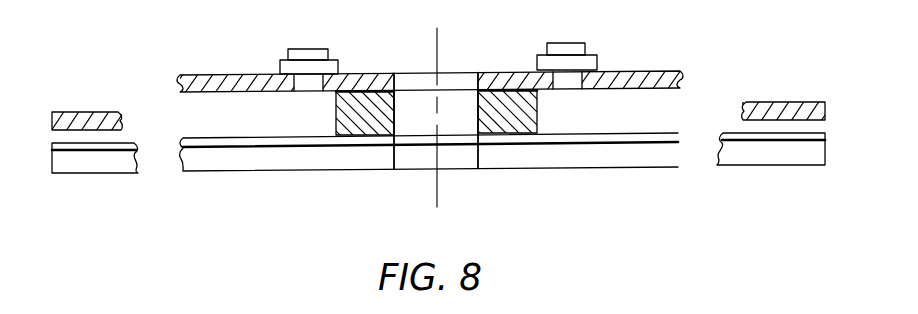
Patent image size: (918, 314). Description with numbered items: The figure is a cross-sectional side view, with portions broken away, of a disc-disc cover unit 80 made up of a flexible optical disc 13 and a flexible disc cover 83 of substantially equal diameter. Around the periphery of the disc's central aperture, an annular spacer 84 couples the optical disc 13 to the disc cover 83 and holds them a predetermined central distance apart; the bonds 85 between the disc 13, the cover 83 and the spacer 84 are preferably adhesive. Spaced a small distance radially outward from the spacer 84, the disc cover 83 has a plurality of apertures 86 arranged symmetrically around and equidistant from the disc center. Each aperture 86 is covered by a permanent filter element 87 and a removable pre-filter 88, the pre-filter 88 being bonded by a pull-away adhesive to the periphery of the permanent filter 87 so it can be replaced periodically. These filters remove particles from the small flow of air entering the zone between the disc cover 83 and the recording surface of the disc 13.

The optical disc 13 is at (205, 173).
The disc-disc cover unit 80 is at (360, 172).
The disc cover 83 is at (203, 74).
The annular spacer 84 is at (389, 109).
The bonds 85 is at (337, 96).
The apertures 86 is at (307, 85).
The permanent filter element 87 is at (282, 70).
The removable filter 88 is at (313, 49).